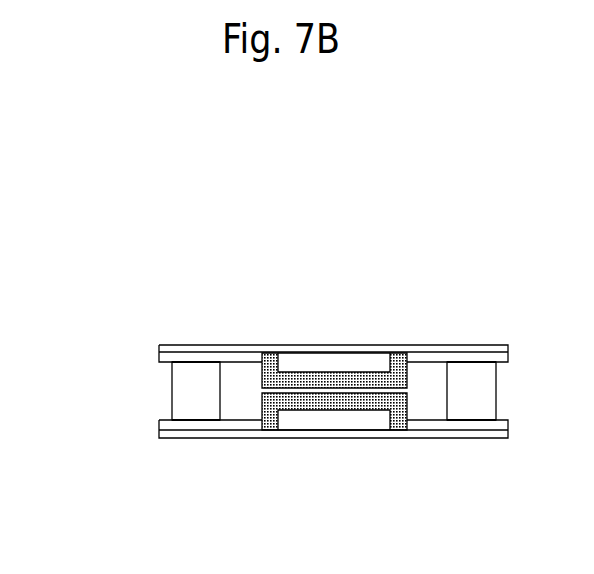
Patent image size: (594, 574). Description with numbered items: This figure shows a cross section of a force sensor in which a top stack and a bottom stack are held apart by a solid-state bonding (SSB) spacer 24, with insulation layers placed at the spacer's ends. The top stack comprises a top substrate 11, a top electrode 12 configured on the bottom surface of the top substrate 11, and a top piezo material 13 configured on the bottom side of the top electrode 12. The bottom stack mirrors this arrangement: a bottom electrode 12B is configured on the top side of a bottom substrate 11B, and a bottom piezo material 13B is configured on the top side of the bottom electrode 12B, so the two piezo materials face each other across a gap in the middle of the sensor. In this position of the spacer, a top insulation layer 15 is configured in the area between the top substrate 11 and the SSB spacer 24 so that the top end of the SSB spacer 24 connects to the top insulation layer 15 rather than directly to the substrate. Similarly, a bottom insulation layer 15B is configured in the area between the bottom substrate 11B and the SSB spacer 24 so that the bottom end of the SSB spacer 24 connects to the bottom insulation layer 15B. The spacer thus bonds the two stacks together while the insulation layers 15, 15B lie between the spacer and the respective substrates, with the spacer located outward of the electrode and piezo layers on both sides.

The top substrate 11 is at (308, 345).
The top electrode 12 is at (326, 363).
The top piezo material 13 is at (348, 377).
The bottom substrate 11B is at (322, 432).
The bottom electrode 12B is at (340, 417).
The bottom piezo material 13B is at (366, 405).
The top insulation layer 15 is at (193, 358).
The bottom insulation layer 15B is at (205, 425).
The SSB spacer 24 is at (185, 401).
The solid-state bonding SSB is at (178, 391).